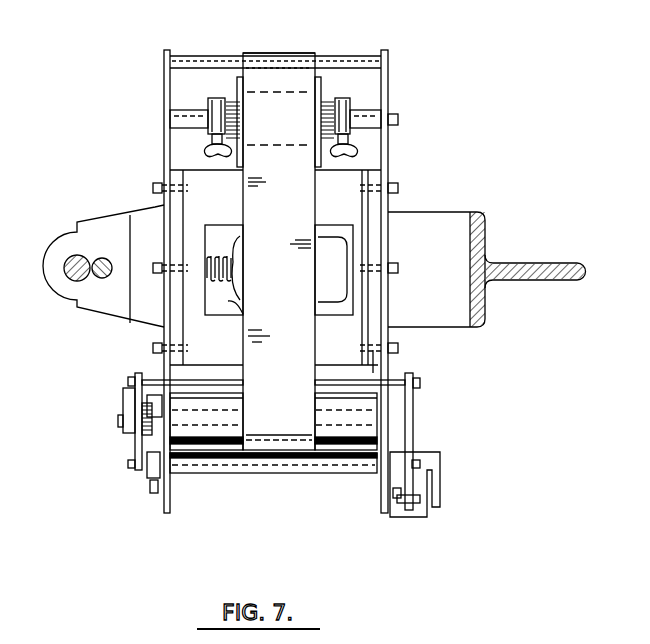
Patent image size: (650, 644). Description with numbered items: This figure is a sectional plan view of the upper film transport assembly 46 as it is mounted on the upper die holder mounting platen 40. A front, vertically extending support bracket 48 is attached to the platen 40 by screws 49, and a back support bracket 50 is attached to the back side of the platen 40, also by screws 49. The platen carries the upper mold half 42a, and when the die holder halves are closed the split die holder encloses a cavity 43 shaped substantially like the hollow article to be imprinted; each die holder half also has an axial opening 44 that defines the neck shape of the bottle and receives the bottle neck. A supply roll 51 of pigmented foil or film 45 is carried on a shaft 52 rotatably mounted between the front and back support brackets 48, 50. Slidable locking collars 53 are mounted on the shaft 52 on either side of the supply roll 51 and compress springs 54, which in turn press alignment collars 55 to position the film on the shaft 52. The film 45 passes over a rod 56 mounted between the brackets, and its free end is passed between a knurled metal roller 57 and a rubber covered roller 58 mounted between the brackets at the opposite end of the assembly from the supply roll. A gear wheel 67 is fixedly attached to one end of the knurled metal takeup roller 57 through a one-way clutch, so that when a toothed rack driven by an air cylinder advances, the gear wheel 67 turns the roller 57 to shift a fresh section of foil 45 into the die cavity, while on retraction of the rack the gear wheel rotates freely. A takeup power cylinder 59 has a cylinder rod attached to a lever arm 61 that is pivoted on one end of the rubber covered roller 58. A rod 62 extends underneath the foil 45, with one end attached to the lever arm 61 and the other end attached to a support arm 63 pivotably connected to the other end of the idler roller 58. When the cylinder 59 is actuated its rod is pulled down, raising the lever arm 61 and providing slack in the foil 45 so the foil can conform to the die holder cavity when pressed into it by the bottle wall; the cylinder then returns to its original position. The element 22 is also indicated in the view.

The stem / handle 22 is at (567, 255).
The upper die holder mounting platen 40 is at (383, 330).
The upper mold half 42a is at (230, 302).
The cavity 43 is at (323, 248).
The axial opening 44 is at (206, 262).
The pigmented foil or film 45 is at (292, 226).
The upper film transport assembly 46 is at (412, 124).
The front support bracket 48 is at (166, 145).
The screws 49 is at (153, 187).
The back support bracket 50 is at (383, 78).
The supply roll 51 is at (278, 80).
The shaft 52 is at (177, 110).
The slidable locking collars 53 is at (215, 131).
The springs 54 is at (226, 100).
The alignment collars 55 is at (241, 83).
The rod 56 is at (181, 60).
The knurled metal roller 57 is at (372, 420).
The rubber covered roller 58 is at (328, 475).
The takeup power cylinder 59 is at (415, 505).
The lever arm 61 is at (410, 441).
The rod 62 is at (392, 379).
The support arm 63 is at (138, 450).
The gear wheel 67 is at (137, 447).